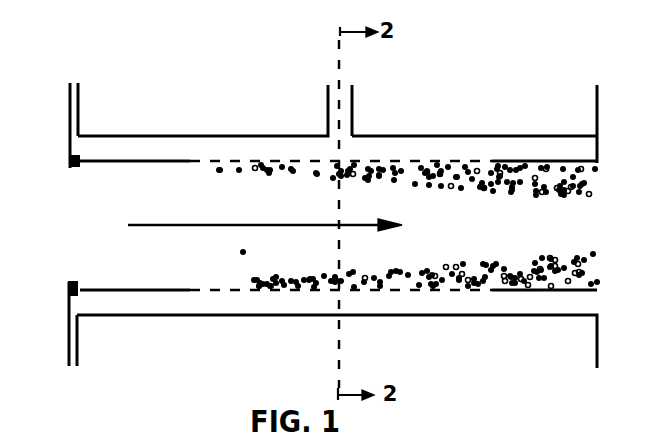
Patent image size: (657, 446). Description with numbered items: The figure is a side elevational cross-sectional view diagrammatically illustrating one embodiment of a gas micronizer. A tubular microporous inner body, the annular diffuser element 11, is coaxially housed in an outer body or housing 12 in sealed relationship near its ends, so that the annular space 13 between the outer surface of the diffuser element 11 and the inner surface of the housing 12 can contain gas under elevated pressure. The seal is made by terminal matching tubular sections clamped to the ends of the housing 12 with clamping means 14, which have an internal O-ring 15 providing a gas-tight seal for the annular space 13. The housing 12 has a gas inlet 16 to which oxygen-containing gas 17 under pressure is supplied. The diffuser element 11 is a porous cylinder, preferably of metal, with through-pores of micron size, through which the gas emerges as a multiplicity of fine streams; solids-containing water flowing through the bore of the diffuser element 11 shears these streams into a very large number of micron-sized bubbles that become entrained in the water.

The annular diffuser element 11 is at (453, 162).
The housing 12 is at (517, 136).
The annular space 13 is at (563, 155).
The clamping means 14 is at (70, 103).
The O-ring 15 is at (73, 168).
The gas inlet 16 is at (328, 97).
The oxygen-containing gas 17 is at (338, 93).